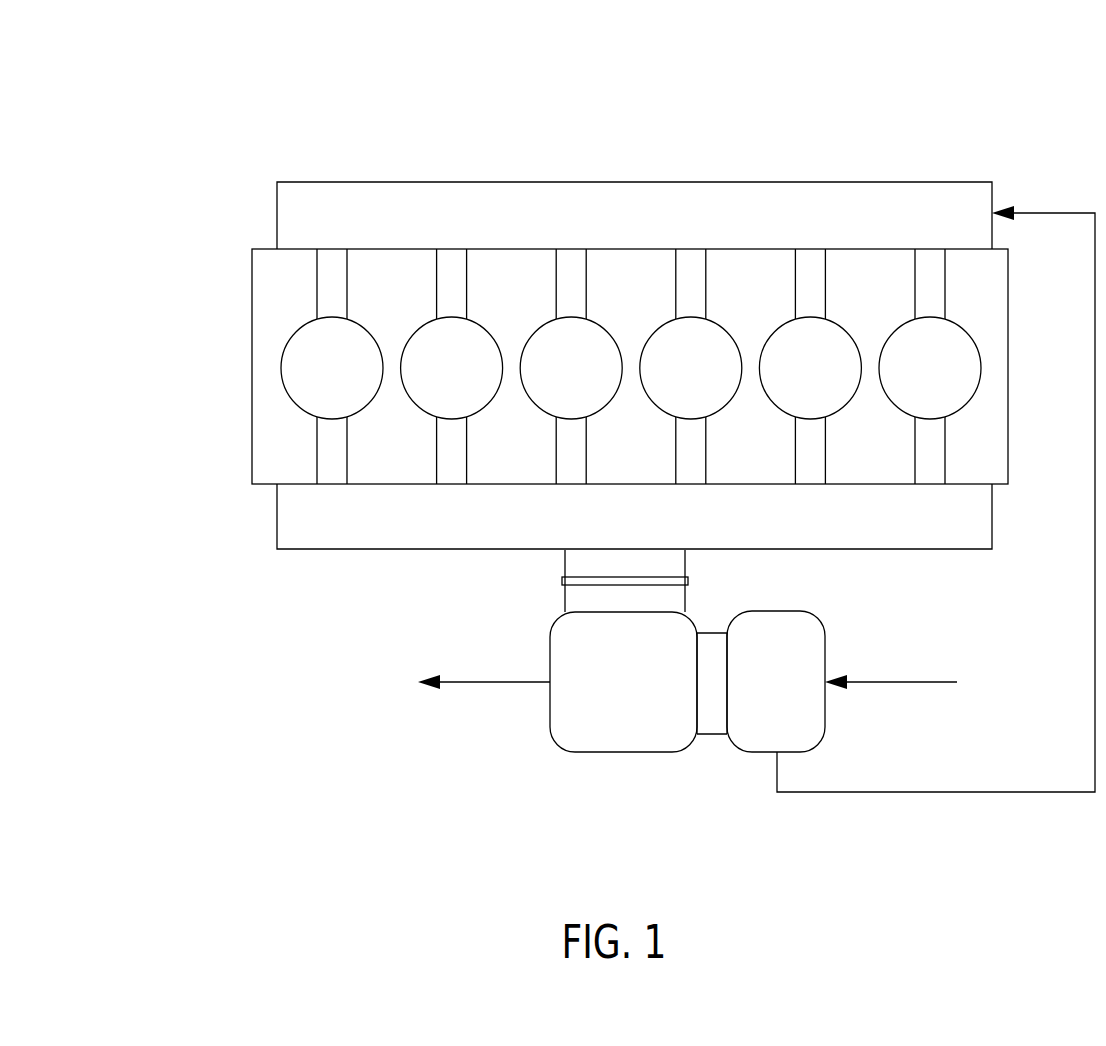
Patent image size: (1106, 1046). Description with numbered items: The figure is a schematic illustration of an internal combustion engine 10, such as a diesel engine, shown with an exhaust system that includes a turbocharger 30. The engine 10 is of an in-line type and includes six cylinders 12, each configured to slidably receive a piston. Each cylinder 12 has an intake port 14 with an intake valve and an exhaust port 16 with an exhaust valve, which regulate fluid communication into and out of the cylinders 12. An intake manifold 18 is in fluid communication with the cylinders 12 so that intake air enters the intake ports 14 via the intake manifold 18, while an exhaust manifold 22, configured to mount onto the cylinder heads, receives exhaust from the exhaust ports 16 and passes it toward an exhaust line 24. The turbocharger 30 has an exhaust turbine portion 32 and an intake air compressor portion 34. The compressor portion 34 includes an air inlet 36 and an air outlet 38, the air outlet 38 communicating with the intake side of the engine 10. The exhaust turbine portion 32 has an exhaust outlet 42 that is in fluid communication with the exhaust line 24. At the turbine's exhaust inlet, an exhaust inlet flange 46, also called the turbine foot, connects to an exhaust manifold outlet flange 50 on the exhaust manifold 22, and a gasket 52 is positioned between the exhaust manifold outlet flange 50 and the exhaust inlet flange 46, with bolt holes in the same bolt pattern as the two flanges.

The internal combustion engine 10 is at (188, 113).
The cylinders 12 is at (941, 387).
The intake ports 14 is at (332, 265).
The exhaust ports 16 is at (332, 455).
The intake manifold 18 is at (300, 193).
The exhaust manifold 22 is at (294, 512).
The exhaust line 24 is at (468, 685).
The turbocharger 30 is at (533, 791).
The exhaust turbine portion 32 is at (610, 730).
The intake air compressor portion 34 is at (750, 730).
The air inlet 36 is at (851, 647).
The air outlet 38 is at (802, 773).
The exhaust outlet 42 is at (521, 659).
The exhaust inlet flange 46 is at (673, 597).
The exhaust manifold outlet flange 50 is at (580, 562).
The gasket 52 is at (680, 580).